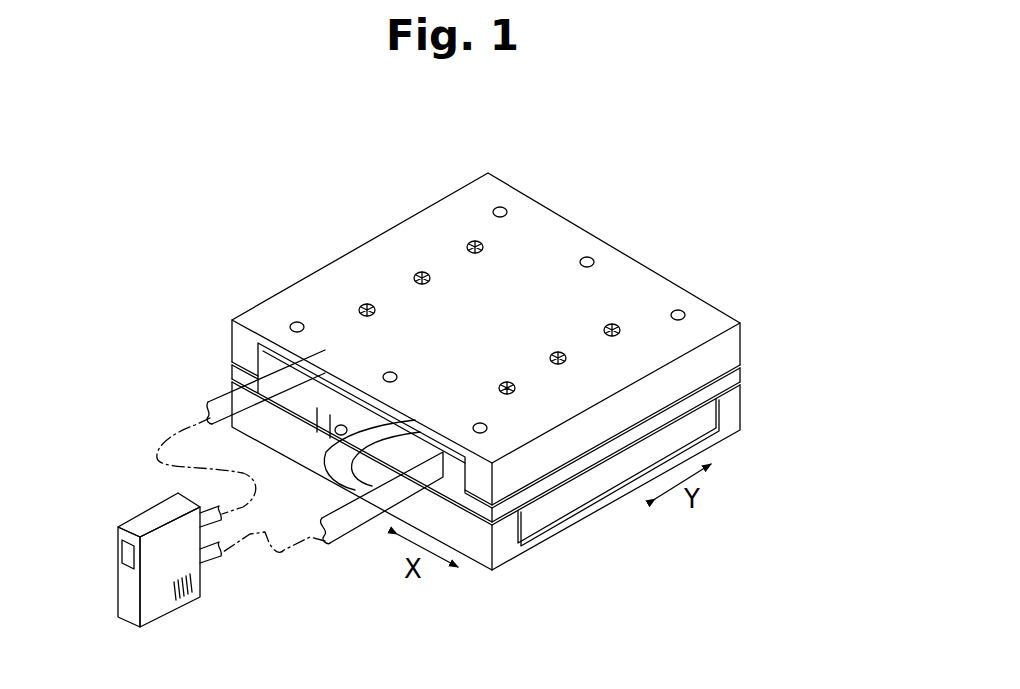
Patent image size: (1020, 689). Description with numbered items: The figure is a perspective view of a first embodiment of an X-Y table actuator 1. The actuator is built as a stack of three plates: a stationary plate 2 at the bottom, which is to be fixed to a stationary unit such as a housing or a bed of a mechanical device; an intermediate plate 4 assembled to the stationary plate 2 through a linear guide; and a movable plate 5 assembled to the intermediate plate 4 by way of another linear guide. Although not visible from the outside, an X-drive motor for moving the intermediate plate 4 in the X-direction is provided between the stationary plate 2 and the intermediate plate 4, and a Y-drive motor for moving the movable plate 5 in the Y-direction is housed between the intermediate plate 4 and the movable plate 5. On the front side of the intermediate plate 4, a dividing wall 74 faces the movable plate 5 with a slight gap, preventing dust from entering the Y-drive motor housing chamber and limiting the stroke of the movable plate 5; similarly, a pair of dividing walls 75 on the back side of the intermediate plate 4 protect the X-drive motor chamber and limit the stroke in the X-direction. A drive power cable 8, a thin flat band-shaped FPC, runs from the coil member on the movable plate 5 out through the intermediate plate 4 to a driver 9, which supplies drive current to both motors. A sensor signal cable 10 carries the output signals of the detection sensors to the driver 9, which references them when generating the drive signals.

The X-Y table actuator 1 is at (644, 251).
The stationary plate 2 is at (565, 527).
The intermediate plate 4 is at (736, 386).
The movable plate 5 is at (736, 350).
The drive power cable 8 is at (352, 548).
The driver 9 is at (200, 597).
The sensor signal cable 10 is at (222, 395).
The dividing wall 74 is at (312, 390).
The dividing walls 75 is at (597, 487).